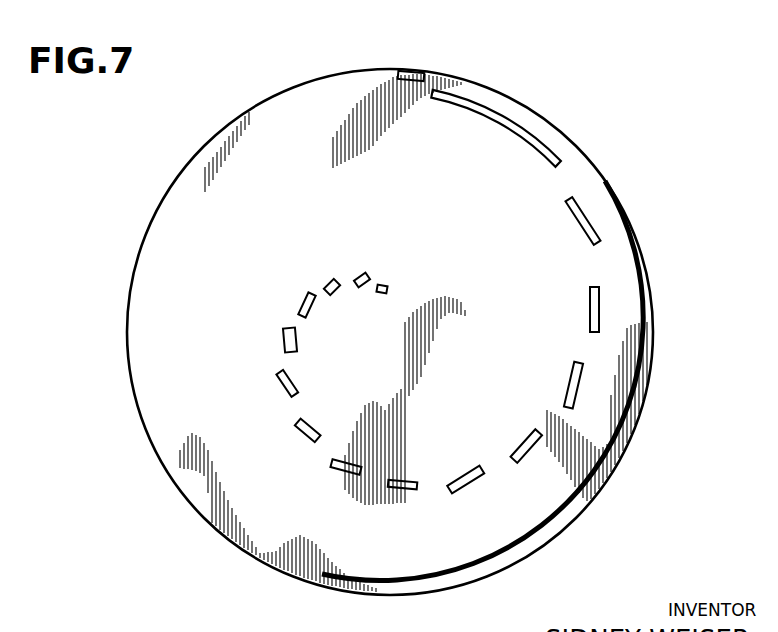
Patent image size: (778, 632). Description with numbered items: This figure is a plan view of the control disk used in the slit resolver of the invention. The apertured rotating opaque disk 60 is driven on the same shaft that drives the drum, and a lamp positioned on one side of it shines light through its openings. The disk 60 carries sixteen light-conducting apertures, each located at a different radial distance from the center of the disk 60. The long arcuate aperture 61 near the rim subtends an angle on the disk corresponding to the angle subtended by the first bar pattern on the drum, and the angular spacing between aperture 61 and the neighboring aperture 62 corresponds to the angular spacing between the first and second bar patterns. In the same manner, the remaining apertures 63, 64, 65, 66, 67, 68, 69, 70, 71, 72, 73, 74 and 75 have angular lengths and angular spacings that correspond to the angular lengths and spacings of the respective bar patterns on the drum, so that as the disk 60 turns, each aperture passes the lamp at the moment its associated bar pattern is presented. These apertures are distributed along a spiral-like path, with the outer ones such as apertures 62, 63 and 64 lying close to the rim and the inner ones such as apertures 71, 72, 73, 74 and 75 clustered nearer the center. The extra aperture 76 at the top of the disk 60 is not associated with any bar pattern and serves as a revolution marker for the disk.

The apertured rotating opaque disk 60 is at (292, 82).
The light-conducting aperture 61 is at (520, 125).
The light-conducting aperture 62 is at (597, 232).
The light-conducting aperture 63 is at (600, 305).
The light-conducting aperture 64 is at (581, 387).
The light-conducting aperture 65 is at (527, 455).
The light-conducting aperture 66 is at (464, 489).
The light-conducting aperture 67 is at (402, 489).
The light-conducting aperture 68 is at (342, 472).
The light-conducting aperture 69 is at (300, 435).
The light-conducting aperture 70 is at (280, 384).
The light-conducting aperture 71 is at (284, 338).
The light-conducting aperture 72 is at (303, 298).
The light-conducting aperture 73 is at (330, 281).
The light-conducting aperture 74 is at (364, 276).
The light-conducting aperture 75 is at (388, 289).
The extra aperture 76 is at (410, 73).